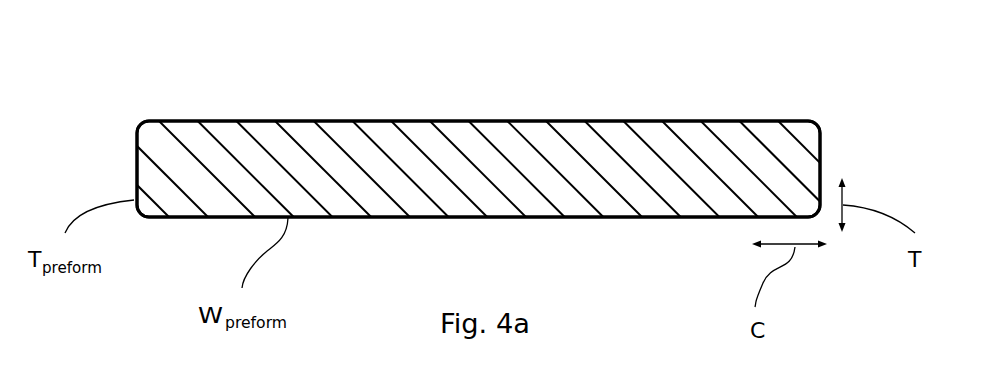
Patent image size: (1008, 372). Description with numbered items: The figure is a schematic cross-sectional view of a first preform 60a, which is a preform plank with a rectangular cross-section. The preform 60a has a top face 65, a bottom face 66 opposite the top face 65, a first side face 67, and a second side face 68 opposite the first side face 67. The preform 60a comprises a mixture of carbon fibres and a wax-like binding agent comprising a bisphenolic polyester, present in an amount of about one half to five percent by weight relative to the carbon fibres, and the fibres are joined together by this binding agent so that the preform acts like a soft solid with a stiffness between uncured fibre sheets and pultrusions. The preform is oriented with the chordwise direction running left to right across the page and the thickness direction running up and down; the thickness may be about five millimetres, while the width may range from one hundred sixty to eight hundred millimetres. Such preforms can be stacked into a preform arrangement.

The first preform 60a is at (326, 71).
The top face 65 is at (550, 121).
The bottom face 66 is at (635, 218).
The first side face 67 is at (133, 165).
The second side face 68 is at (819, 170).